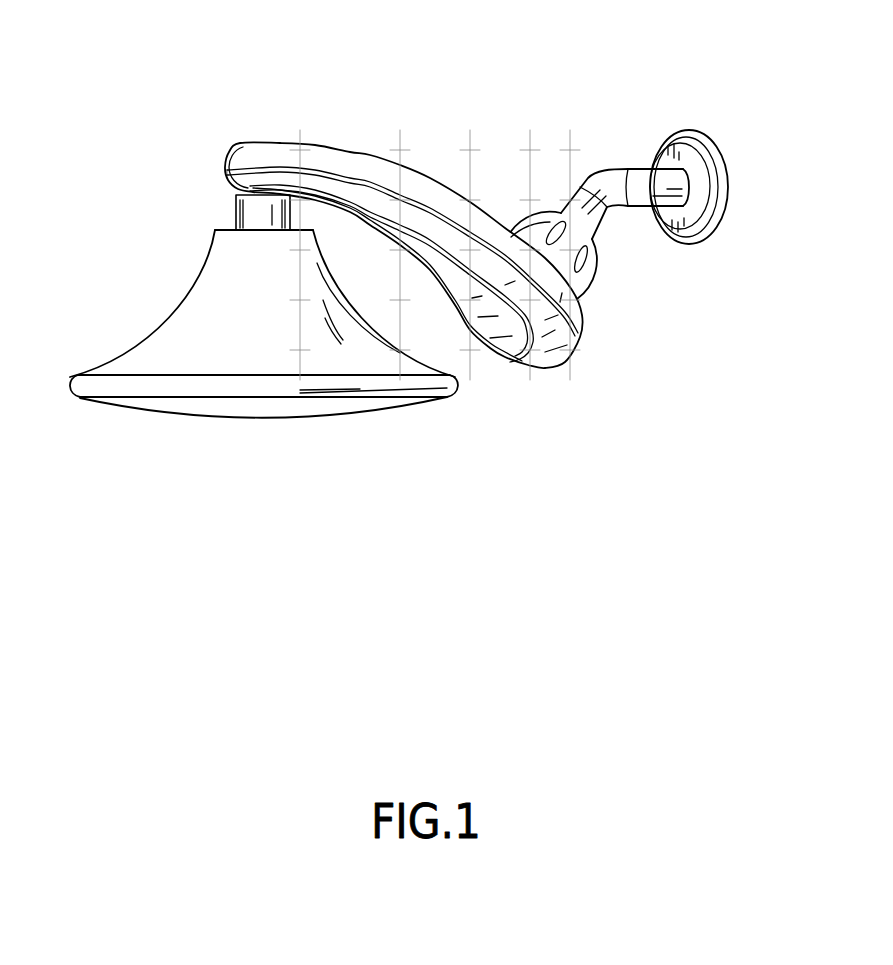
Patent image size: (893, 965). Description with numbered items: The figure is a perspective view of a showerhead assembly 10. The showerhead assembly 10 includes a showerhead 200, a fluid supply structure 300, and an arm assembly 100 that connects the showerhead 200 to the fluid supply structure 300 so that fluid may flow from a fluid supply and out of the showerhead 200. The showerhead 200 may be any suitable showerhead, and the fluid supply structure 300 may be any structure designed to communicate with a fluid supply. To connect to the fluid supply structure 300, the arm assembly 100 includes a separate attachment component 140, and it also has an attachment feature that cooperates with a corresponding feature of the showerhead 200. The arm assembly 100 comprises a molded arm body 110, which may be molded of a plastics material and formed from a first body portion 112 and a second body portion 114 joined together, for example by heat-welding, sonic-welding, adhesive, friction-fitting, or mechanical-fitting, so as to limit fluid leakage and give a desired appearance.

The showerhead assembly 10 is at (465, 459).
The arm assembly 100 is at (458, 152).
The molded arm body 110 is at (322, 143).
The first body portion 112 is at (232, 148).
The second body portion 114 is at (549, 360).
The attachment component 140 is at (598, 283).
The showerhead 200 is at (138, 405).
The fluid supply structure 300 is at (613, 165).